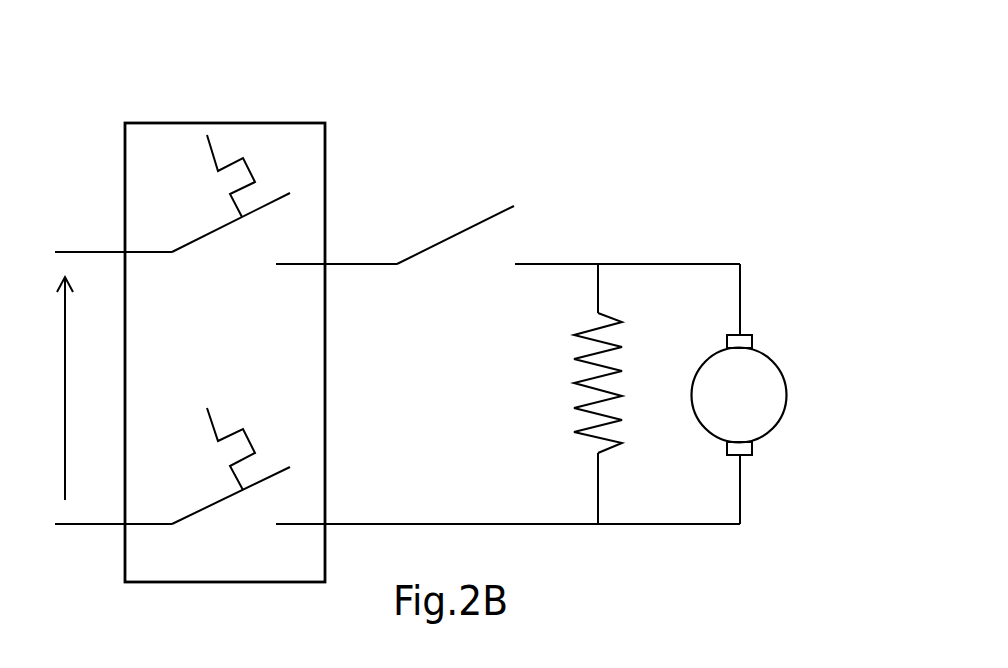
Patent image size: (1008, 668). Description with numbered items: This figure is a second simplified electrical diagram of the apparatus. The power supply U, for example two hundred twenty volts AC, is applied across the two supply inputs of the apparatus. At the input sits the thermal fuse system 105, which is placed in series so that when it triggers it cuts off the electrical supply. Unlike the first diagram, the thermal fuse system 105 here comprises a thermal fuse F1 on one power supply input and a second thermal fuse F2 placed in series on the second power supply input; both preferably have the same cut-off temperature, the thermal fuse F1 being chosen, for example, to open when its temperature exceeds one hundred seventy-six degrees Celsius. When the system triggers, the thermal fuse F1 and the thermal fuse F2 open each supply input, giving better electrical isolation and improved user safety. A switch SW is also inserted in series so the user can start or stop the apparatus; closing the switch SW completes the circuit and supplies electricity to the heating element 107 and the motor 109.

The thermal fuse system 105 is at (316, 123).
The thermal fuse F1 is at (228, 167).
The second thermal fuse F2 is at (255, 453).
The switch SW is at (478, 201).
The heating element 107 is at (570, 383).
The motor 109 is at (773, 367).
The power supply U is at (45, 388).